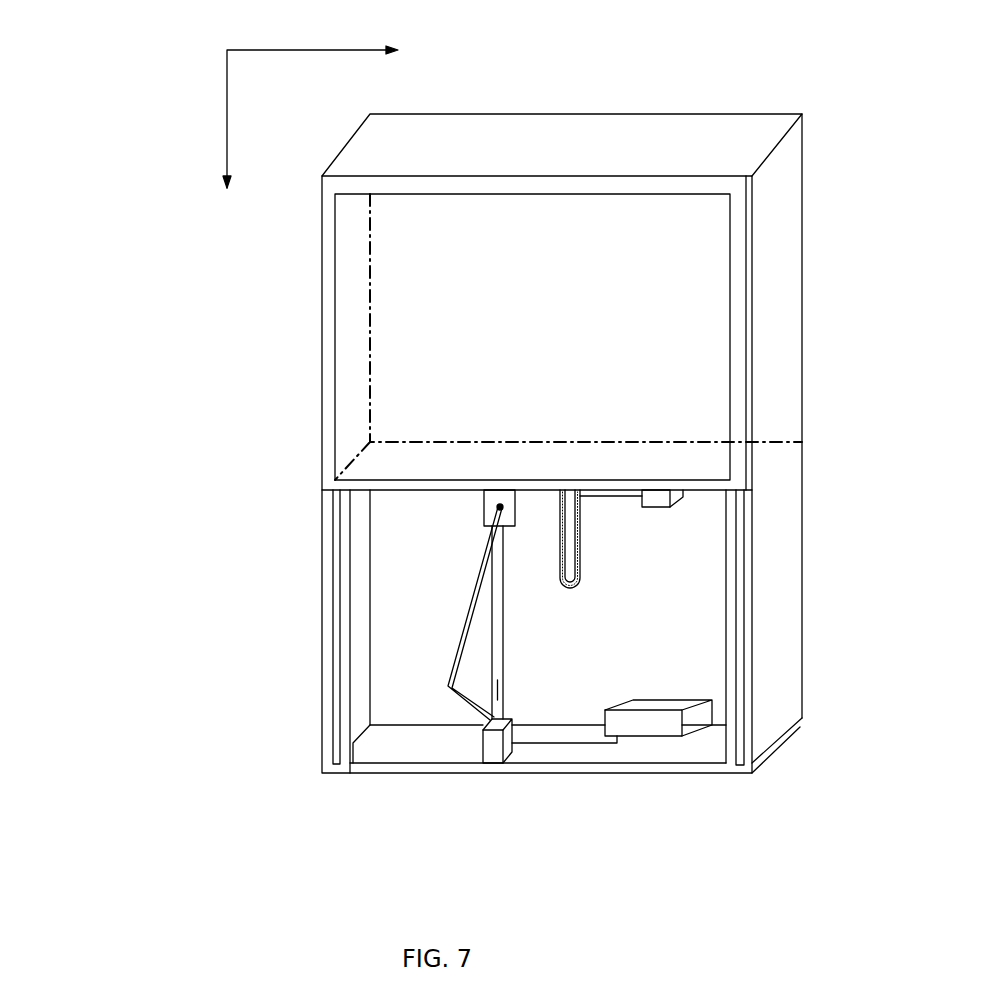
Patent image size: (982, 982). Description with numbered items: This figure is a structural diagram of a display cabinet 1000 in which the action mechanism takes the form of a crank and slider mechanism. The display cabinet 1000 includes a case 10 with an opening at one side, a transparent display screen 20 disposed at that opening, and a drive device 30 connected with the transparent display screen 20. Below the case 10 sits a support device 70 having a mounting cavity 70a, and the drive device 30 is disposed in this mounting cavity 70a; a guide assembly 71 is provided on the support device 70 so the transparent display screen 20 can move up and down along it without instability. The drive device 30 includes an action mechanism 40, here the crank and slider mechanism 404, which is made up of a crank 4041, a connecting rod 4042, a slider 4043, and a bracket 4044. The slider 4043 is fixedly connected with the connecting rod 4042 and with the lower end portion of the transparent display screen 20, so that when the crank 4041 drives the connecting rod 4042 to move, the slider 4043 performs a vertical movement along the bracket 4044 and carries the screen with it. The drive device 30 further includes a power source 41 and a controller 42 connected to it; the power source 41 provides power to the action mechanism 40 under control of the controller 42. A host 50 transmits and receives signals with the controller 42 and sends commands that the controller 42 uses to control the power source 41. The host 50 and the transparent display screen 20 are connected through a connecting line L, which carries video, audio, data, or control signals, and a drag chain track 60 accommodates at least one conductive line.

The display cabinet 1000 is at (200, 45).
The case 10 is at (787, 212).
The transparent display screen 20 is at (755, 317).
The drive device 30 is at (75, 528).
The action mechanism 40 is at (157, 568).
The crank and slider mechanism 404 is at (228, 517).
The crank 4041 is at (465, 633).
The connecting rod 4042 is at (492, 567).
The slider 4043 is at (484, 517).
The bracket 4044 is at (497, 688).
The power source 41 is at (490, 750).
The controller 42 is at (647, 725).
The host 50 is at (673, 497).
The drag chain track 60 is at (580, 558).
The support device 70 is at (780, 653).
The guide assembly 71 is at (740, 722).
The mounting cavity 70a is at (388, 708).
The connecting line L is at (607, 500).